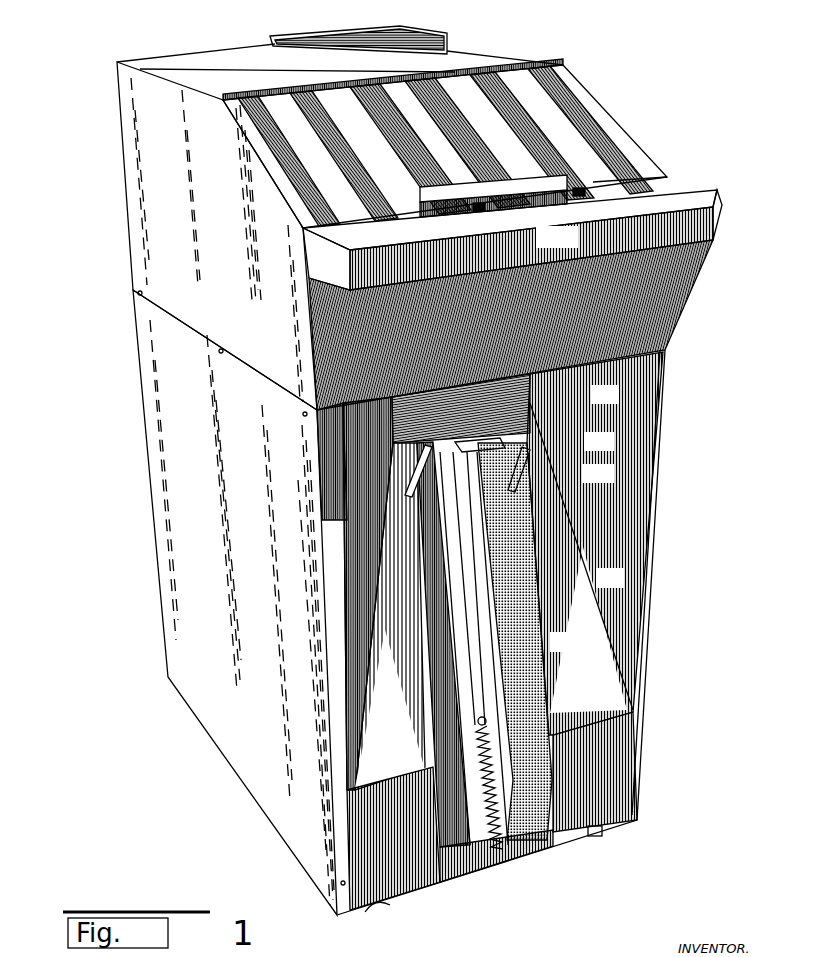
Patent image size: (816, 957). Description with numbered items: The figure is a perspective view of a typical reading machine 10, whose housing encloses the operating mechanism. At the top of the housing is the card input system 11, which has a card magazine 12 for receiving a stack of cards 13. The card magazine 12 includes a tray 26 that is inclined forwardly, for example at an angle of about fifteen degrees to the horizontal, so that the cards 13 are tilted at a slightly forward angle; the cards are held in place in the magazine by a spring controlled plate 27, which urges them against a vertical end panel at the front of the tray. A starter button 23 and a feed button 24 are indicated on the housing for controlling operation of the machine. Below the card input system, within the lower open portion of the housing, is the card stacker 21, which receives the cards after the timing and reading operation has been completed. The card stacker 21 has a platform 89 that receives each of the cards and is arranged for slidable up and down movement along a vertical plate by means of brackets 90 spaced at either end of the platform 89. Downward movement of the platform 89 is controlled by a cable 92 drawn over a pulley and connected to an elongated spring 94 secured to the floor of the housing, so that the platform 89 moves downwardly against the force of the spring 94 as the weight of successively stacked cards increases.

The reading machine 10 is at (130, 371).
The card input system 11 is at (362, 141).
The card magazine 12 is at (307, 65).
The cards 13 is at (400, 200).
The card stacker 21 is at (522, 585).
The starter button 23 is at (512, 240).
The feed button 24 is at (655, 178).
The tray 26 is at (453, 105).
The spring controlled plate 27 is at (540, 172).
The platform 89 is at (527, 436).
The brackets 90 is at (525, 462).
The cable 92 is at (473, 652).
The spring 94 is at (500, 822).